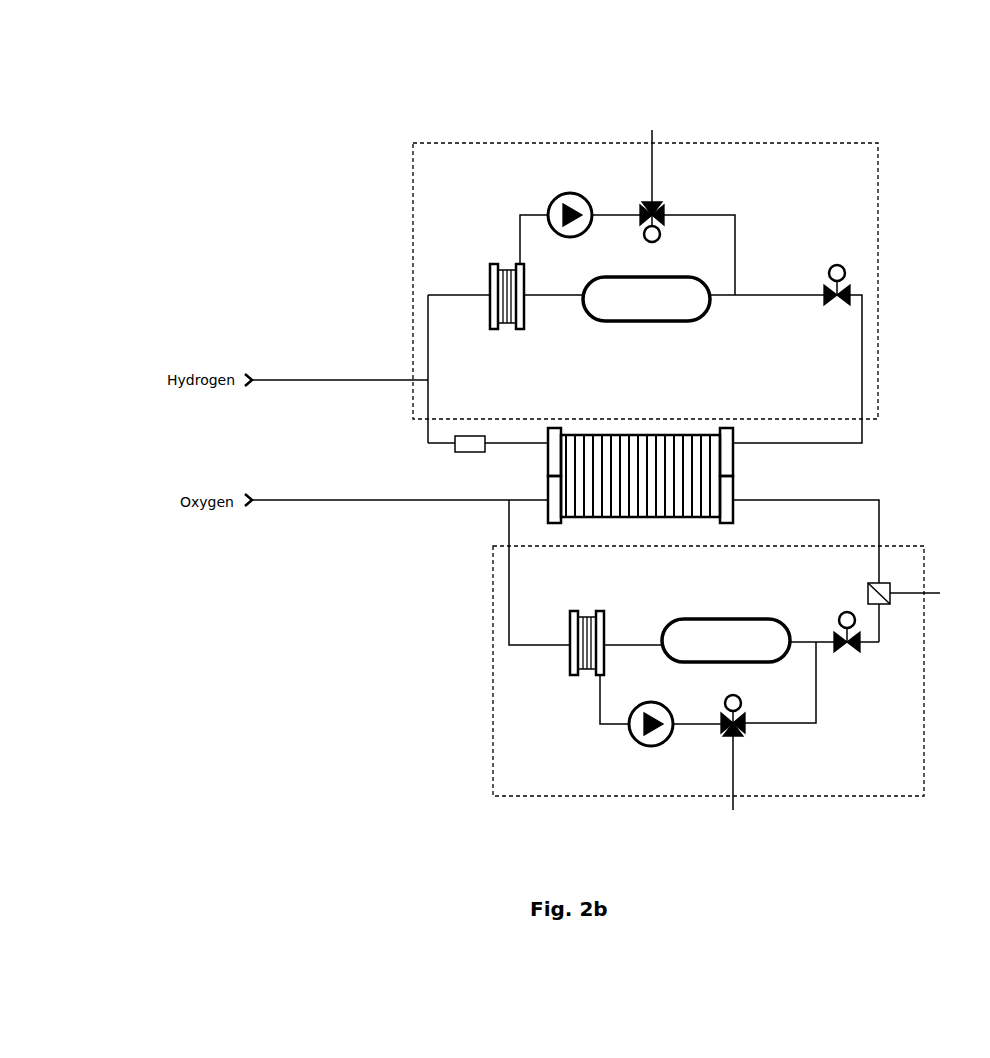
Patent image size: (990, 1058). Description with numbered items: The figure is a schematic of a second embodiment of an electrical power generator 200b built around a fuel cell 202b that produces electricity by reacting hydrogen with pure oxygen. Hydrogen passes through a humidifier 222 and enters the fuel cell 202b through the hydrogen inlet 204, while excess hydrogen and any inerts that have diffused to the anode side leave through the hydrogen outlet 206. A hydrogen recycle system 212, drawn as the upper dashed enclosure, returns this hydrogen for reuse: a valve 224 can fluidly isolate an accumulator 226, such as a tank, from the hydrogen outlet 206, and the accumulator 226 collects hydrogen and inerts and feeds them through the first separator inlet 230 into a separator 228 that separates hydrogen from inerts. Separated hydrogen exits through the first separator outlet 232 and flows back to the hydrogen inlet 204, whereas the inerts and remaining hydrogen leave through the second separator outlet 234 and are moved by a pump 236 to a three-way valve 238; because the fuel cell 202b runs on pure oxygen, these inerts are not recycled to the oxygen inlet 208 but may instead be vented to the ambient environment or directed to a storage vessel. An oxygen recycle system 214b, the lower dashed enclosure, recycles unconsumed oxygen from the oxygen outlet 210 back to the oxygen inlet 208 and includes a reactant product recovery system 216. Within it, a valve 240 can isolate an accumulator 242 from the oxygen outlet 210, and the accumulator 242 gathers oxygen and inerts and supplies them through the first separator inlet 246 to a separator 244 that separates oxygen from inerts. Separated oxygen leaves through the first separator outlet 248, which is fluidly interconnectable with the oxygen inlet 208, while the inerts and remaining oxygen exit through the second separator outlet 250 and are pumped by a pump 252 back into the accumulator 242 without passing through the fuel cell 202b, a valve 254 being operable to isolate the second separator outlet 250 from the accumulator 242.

The electrical power generator 200b is at (672, 58).
The hydrogen recycle system 212 is at (752, 94).
The oxygen recycle system 214b is at (948, 634).
The fuel cell 202b is at (676, 436).
The hydrogen inlet 204 is at (546, 446).
The hydrogen outlet 206 is at (735, 444).
The oxygen inlet 208 is at (546, 504).
The oxygen outlet 210 is at (734, 504).
The reactant product recovery system 216 is at (885, 583).
The humidifier 222 is at (470, 434).
The valve 224 is at (838, 262).
The accumulator 226 is at (704, 323).
The separator 228 is at (503, 330).
The first separator inlet 230 is at (528, 298).
The first separator outlet 232 is at (486, 292).
The second separator outlet 234 is at (518, 264).
The pump 236 is at (566, 192).
The three-way valve 238 is at (660, 204).
The valve 240 is at (848, 648).
The accumulator 242 is at (770, 616).
The separator 244 is at (582, 612).
The first separator inlet 246 is at (607, 642).
The first separator outlet 248 is at (568, 650).
The second separator outlet 250 is at (598, 678).
The pump 252 is at (655, 748).
The valve 254 is at (743, 697).